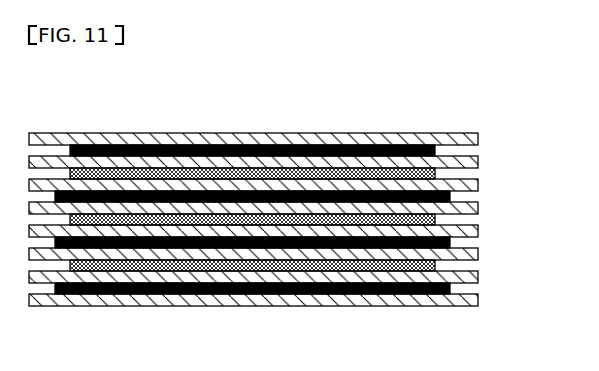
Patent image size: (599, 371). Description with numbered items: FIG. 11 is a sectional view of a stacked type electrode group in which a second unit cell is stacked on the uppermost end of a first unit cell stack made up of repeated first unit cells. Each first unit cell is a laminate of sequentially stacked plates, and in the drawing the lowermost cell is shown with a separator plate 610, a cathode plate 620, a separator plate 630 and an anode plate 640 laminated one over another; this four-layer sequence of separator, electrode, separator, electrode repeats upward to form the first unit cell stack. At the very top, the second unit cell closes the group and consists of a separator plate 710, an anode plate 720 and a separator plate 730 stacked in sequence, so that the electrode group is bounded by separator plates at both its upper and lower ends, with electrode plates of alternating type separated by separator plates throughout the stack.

The separator / insulating layer 710 is at (479, 138).
The electrode layer 720 is at (435, 155).
The separator / insulating layer 730 is at (479, 166).
The electrolyte layer 640 is at (435, 265).
The separator / insulating layer 630 is at (478, 277).
The electrode layer 620 is at (450, 288).
The separator / insulating layer 610 is at (478, 300).